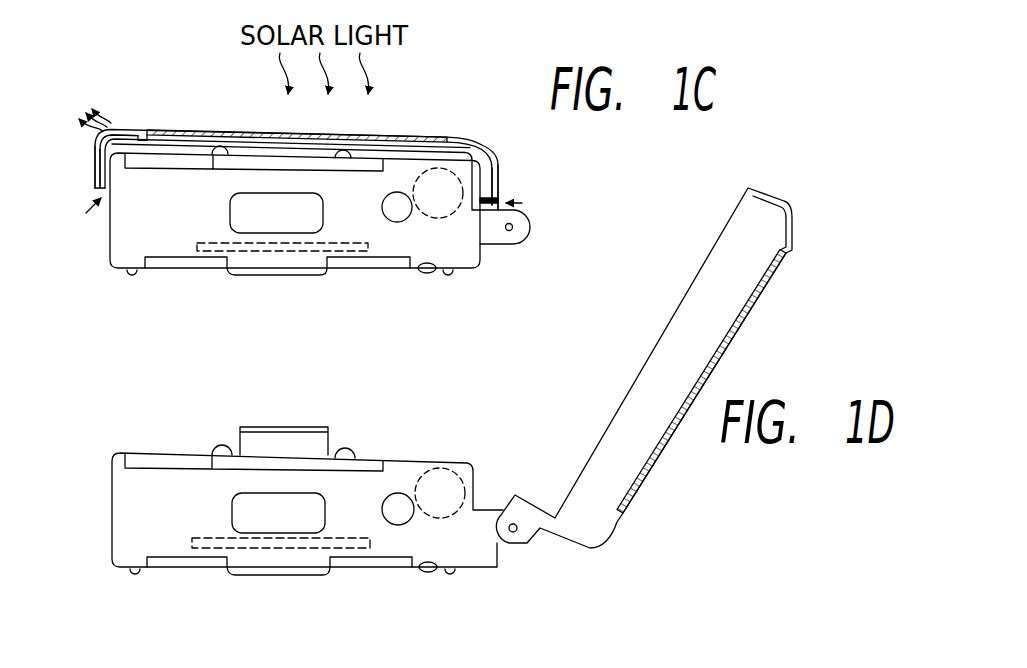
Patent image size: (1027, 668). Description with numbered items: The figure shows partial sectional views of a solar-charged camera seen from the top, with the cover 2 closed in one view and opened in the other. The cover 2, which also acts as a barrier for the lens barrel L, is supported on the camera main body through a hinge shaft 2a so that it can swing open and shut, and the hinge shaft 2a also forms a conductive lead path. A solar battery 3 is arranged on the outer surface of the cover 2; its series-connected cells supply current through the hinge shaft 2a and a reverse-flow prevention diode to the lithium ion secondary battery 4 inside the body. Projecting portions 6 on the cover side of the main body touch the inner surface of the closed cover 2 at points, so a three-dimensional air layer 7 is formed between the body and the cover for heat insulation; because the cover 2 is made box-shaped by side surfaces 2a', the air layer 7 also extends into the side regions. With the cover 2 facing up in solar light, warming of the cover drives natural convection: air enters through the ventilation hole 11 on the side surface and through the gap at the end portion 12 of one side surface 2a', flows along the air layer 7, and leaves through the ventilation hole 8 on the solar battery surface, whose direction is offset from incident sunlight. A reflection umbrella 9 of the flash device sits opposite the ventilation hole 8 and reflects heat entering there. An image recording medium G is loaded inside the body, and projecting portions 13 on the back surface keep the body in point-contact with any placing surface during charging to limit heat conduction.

In FIG. 1C, the cover 2 is at (470, 140).
In FIG. 1C, the hinge shaft 2a is at (534, 233).
In FIG. 1C, the side surface 2a' is at (295, 170).
In FIG. 1C, the solar battery 3 is at (392, 138).
In FIG. 1C, the lithium ion secondary battery 4 is at (447, 207).
In FIG. 1C, the projecting portions 6 is at (218, 148).
In FIG. 1D, the projecting portions 6 is at (217, 447).
In FIG. 1C, the air layer 7 is at (180, 141).
In FIG. 1C, the ventilation hole 8 is at (124, 131).
In FIG. 1C, the reflection umbrella 9 is at (144, 134).
In FIG. 1C, the ventilation hole 11 is at (500, 196).
In FIG. 1C, the end portion 12 is at (100, 194).
In FIG. 1C, the projecting portions 13 is at (130, 277).
In FIG. 1D, the projecting portions 13 is at (134, 577).
In FIG. 1C, the image recording medium G is at (247, 253).
In FIG. 1D, the image recording medium G is at (250, 555).
In FIG. 1D, the lens barrel L is at (292, 436).